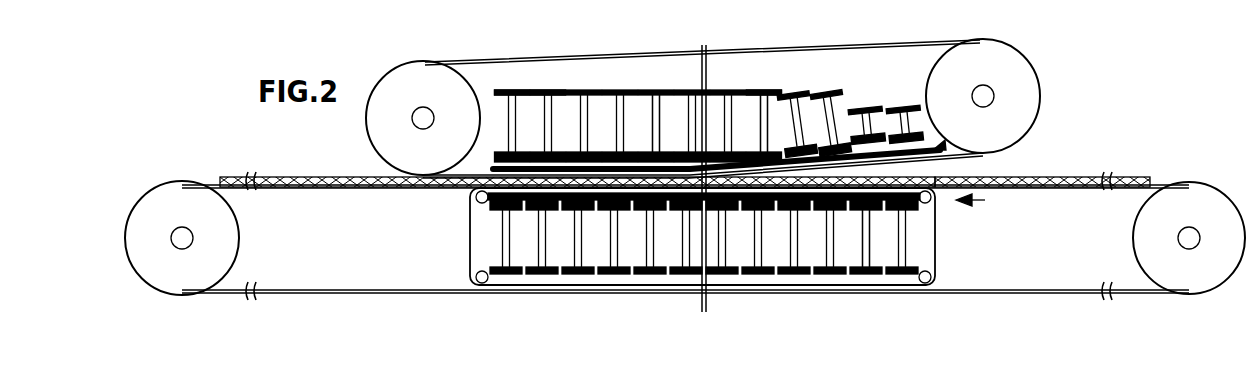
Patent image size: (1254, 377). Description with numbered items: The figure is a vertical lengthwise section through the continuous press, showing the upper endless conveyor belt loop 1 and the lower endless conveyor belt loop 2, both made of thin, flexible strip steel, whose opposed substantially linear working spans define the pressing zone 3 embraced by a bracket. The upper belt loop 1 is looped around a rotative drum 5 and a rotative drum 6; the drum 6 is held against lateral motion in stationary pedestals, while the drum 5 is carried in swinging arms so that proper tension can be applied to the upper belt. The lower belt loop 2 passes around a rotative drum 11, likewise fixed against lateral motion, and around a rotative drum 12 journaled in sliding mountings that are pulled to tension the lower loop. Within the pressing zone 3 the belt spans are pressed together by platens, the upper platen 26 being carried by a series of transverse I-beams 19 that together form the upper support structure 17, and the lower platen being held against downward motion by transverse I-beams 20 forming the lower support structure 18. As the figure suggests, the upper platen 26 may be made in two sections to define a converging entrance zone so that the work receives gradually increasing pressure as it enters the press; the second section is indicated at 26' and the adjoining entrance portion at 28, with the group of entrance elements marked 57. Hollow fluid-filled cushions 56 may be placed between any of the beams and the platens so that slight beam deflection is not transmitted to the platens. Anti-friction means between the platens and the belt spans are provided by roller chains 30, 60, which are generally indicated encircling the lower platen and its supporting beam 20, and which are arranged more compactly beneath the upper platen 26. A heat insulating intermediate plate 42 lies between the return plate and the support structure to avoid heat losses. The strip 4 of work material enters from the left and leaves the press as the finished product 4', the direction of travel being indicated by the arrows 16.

The upper endless conveyor belt loop 1 is at (858, 52).
The lower endless conveyor belt loop 2 is at (1160, 185).
The pressing zone 3 is at (488, 328).
The strip 4 is at (577, 197).
The pressed board leaving the press 4' is at (1042, 152).
The rotative drum 5 is at (431, 77).
The rotative drum 6 is at (1028, 78).
The rotative drum 11 is at (1203, 195).
The rotative drum 12 is at (185, 192).
The direction of belt travel arrow 16 is at (981, 200).
The upper support structure 17 is at (709, 91).
The lower support structure 18 is at (697, 245).
The upper transverse I-beam 19 is at (572, 90).
The lower transverse I-beam 20 is at (510, 275).
The upper platen 26 is at (672, 90).
The lower press plate web 26' is at (887, 245).
The end press plate 28 is at (777, 153).
The roller chain 30 is at (482, 161).
The heat insulating intermediate plate 42 is at (488, 160).
The hollow cushion 56 is at (504, 205).
The lifted press plates at exit 57 is at (917, 84).
The roller chain 60 is at (476, 277).